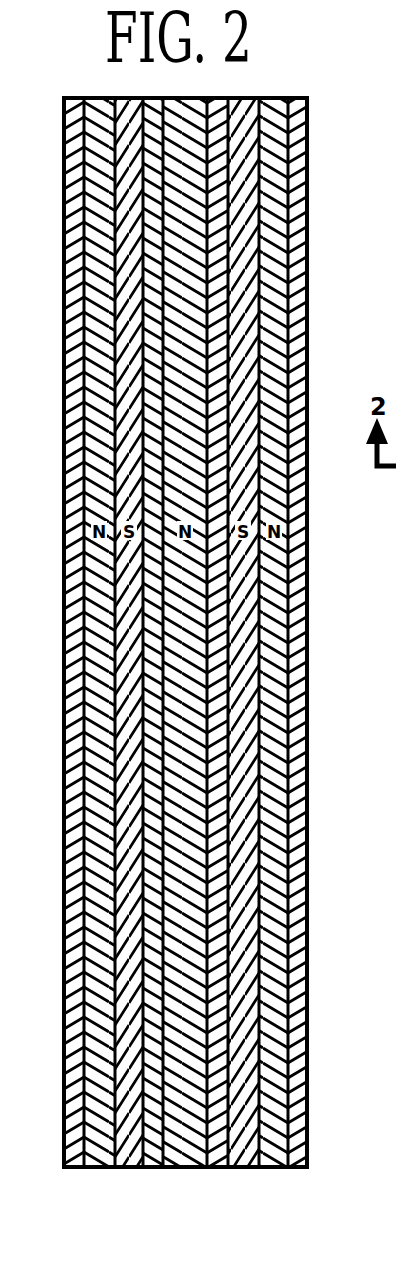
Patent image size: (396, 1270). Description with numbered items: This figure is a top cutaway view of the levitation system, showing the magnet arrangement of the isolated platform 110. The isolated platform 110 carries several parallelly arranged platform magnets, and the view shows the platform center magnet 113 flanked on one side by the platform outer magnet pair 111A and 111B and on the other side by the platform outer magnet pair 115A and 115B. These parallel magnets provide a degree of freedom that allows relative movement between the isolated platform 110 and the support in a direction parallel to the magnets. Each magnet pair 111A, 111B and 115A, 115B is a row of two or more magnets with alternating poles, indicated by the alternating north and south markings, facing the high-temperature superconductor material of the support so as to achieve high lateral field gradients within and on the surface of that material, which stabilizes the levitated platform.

The isolated platform 110 is at (303, 1128).
The platform outer magnet 111A is at (93, 1168).
The platform outer magnet 111B is at (130, 1153).
The platform center magnet 113 is at (184, 1165).
The platform outer magnet 115A is at (250, 1152).
The platform outer magnet 115B is at (279, 1152).